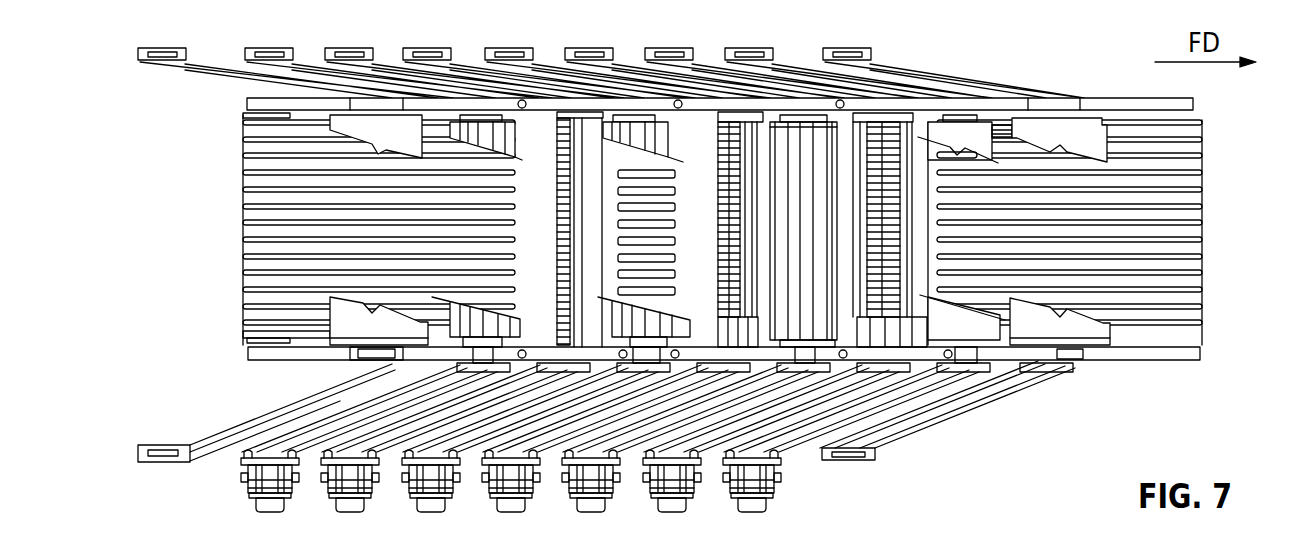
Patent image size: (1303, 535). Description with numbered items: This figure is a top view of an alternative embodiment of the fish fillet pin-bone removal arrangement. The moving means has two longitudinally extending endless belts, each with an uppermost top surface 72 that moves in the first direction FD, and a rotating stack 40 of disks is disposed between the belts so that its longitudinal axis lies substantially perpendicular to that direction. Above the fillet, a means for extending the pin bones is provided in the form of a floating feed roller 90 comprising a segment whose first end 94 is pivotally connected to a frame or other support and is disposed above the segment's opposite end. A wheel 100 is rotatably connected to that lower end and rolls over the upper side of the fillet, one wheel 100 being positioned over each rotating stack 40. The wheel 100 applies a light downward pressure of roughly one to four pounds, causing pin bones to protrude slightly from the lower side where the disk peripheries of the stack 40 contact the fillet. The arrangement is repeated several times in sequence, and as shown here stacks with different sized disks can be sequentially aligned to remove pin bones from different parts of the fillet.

The rotating stack 40 is at (568, 140).
The uppermost top surface 72 is at (258, 322).
The floating feed roller 90 is at (1000, 393).
The first end 94 is at (780, 478).
The wheel 100 is at (822, 318).